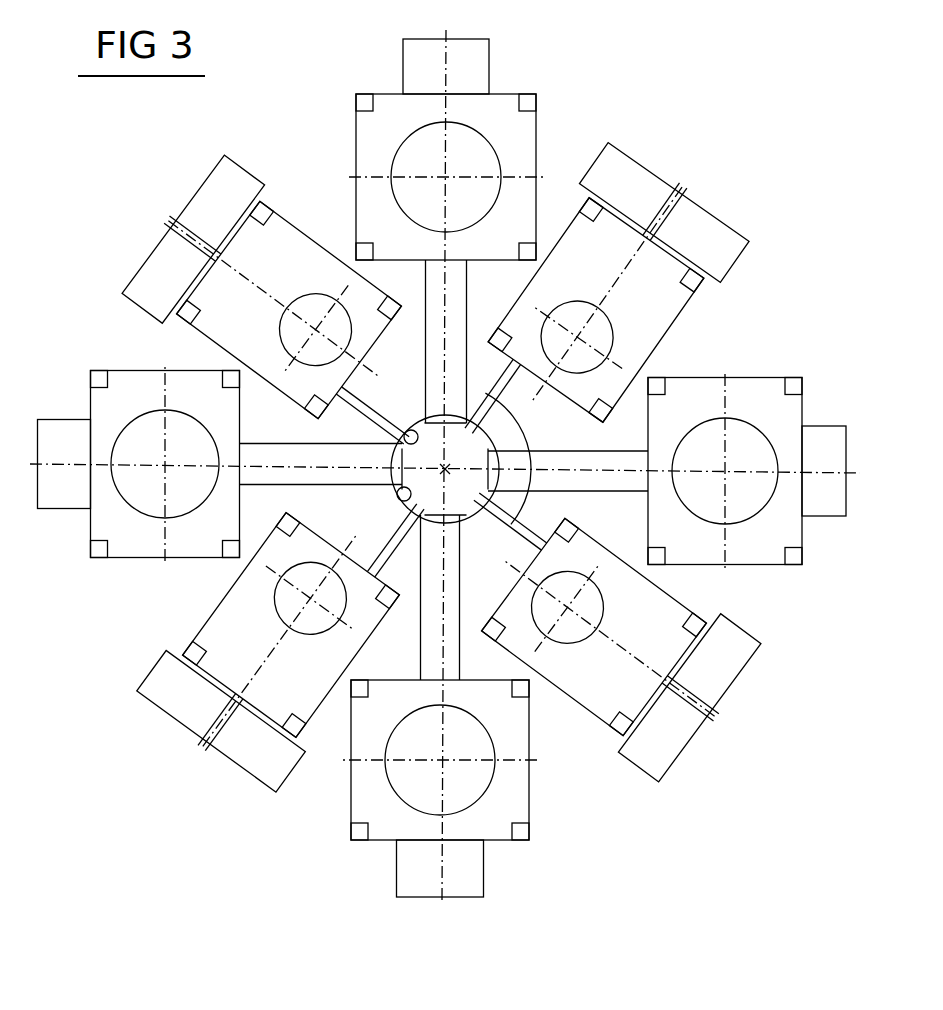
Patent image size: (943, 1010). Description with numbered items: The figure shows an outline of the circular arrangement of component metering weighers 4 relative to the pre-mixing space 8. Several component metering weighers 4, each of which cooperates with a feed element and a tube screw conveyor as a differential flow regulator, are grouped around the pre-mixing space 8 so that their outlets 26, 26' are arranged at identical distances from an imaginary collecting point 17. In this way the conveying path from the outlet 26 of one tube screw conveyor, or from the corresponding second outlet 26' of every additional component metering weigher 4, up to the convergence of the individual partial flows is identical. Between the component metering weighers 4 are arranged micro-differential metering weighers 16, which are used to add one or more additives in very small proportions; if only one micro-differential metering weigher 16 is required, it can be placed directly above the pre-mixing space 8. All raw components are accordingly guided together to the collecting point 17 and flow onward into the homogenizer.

The component metering weigher 4 is at (546, 130).
The micro-differential metering weigher 16 is at (175, 205).
The pre-mixing space 8 is at (445, 465).
The collecting point 17 is at (452, 478).
The outlet 26 is at (369, 516).
The second outlet 26' is at (396, 402).